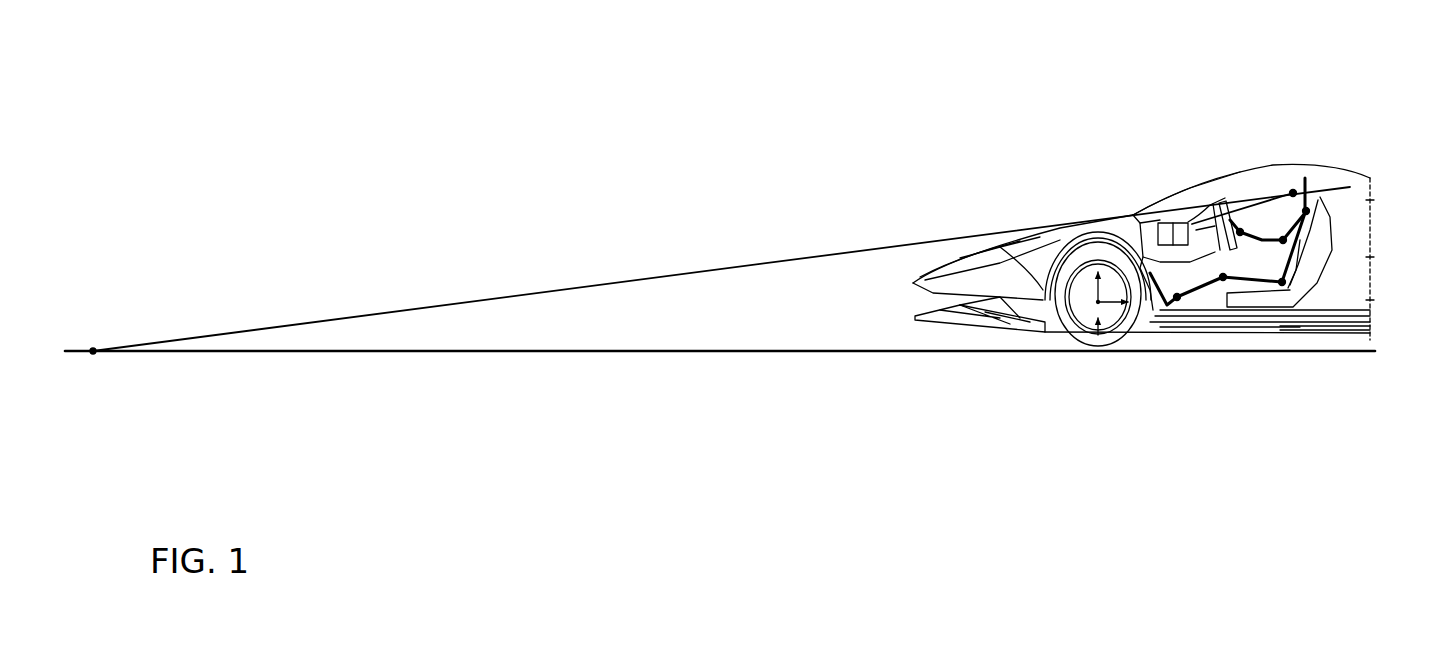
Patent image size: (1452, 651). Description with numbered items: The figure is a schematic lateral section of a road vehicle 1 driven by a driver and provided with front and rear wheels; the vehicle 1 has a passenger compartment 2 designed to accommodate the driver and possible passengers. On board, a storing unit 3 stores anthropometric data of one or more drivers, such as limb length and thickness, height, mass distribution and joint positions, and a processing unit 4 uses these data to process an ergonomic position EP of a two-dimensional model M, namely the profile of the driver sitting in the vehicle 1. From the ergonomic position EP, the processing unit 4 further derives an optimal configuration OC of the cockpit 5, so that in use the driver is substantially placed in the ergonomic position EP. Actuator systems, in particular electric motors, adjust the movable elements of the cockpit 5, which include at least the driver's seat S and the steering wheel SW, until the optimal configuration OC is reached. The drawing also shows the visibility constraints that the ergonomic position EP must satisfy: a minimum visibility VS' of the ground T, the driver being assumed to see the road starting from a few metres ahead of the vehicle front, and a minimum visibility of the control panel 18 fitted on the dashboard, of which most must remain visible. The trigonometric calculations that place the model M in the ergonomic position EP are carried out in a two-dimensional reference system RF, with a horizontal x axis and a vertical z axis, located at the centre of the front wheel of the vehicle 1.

The road vehicle 1 is at (1171, 244).
The passenger compartment 2 is at (1293, 158).
The storing unit 3 is at (1161, 221).
The processing unit 4 is at (1178, 220).
The cockpit 5 is at (1268, 341).
The control panel 18 is at (1185, 320).
The minimum visibility of the ground VS' is at (720, 270).
The steering wheel SW is at (1221, 203).
The model M is at (1284, 220).
The ergonomic position EP is at (1322, 184).
The driver's seat S is at (1328, 233).
The optimal configuration OC is at (1328, 283).
The ground T is at (811, 346).
The two-dimensional reference system RF is at (1090, 347).